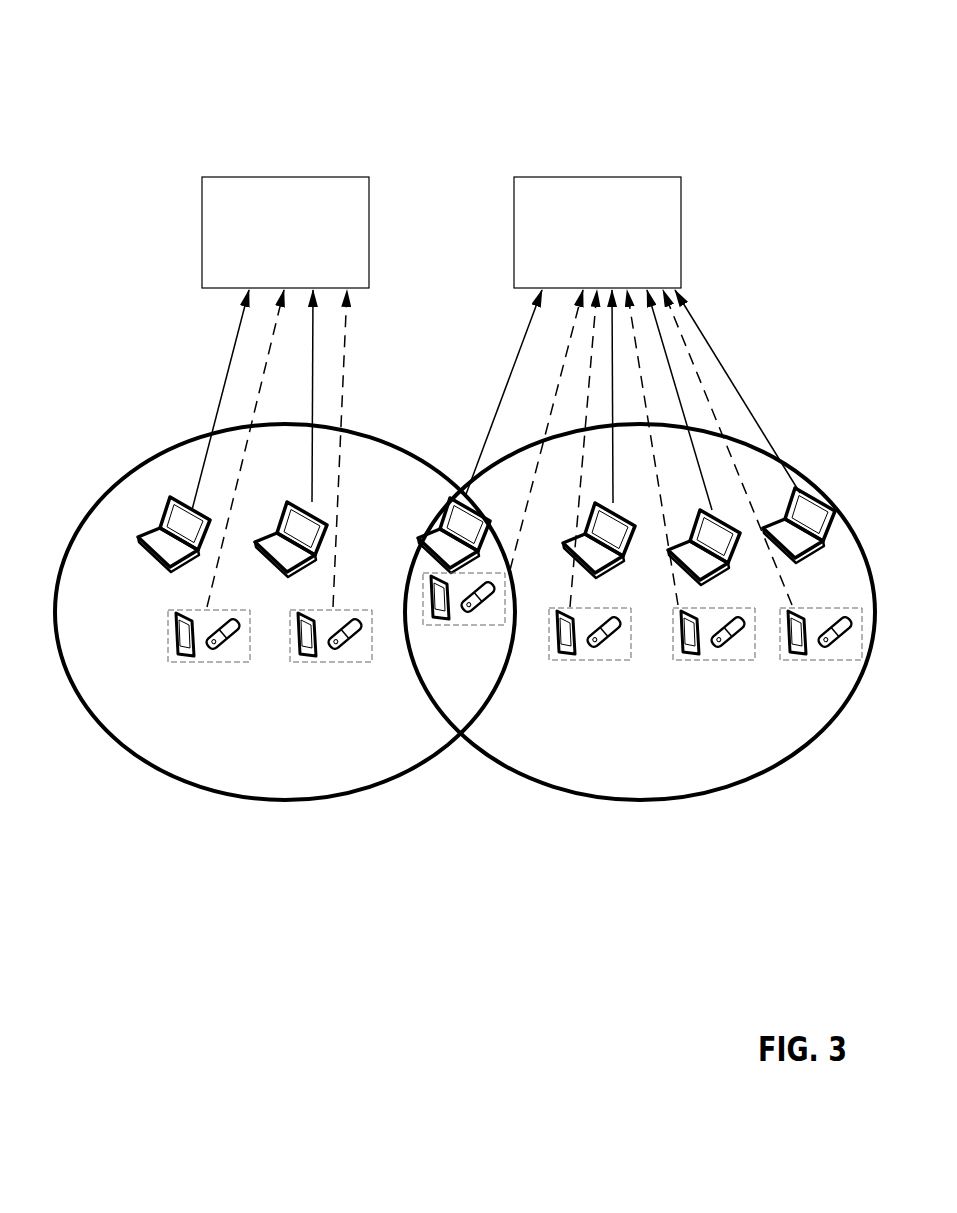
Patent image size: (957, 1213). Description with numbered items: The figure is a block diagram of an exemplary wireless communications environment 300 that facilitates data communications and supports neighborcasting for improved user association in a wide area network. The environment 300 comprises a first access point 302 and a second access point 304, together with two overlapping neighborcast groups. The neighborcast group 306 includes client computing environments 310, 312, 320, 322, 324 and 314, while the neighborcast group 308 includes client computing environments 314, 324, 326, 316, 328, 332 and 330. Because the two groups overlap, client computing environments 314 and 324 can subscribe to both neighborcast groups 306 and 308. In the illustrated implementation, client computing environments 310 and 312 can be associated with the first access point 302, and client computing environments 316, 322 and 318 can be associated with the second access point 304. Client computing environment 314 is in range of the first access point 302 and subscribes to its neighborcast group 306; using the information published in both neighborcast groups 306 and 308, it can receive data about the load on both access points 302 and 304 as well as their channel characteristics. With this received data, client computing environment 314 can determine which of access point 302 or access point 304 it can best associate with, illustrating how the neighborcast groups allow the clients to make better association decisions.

The wireless communications environment 300 is at (485, 70).
The access point-1 302 is at (340, 177).
The access point-2 304 is at (638, 177).
The neighborcast group 306 is at (290, 802).
The neighborcast group 308 is at (638, 802).
The client computing environment 310 is at (193, 500).
The client computing environment 312 is at (325, 512).
The client computing environment 314 is at (489, 512).
The client computing environment 316 is at (626, 503).
The client computing environment 318 is at (791, 562).
The client computing environment 320 is at (210, 663).
The client computing environment 322 is at (334, 663).
The client computing environment 324 is at (468, 630).
The client computing environment 326 is at (592, 663).
The client computing environment 328 is at (715, 663).
The client computing environment 330 is at (820, 663).
The client computing environment 332 is at (713, 512).